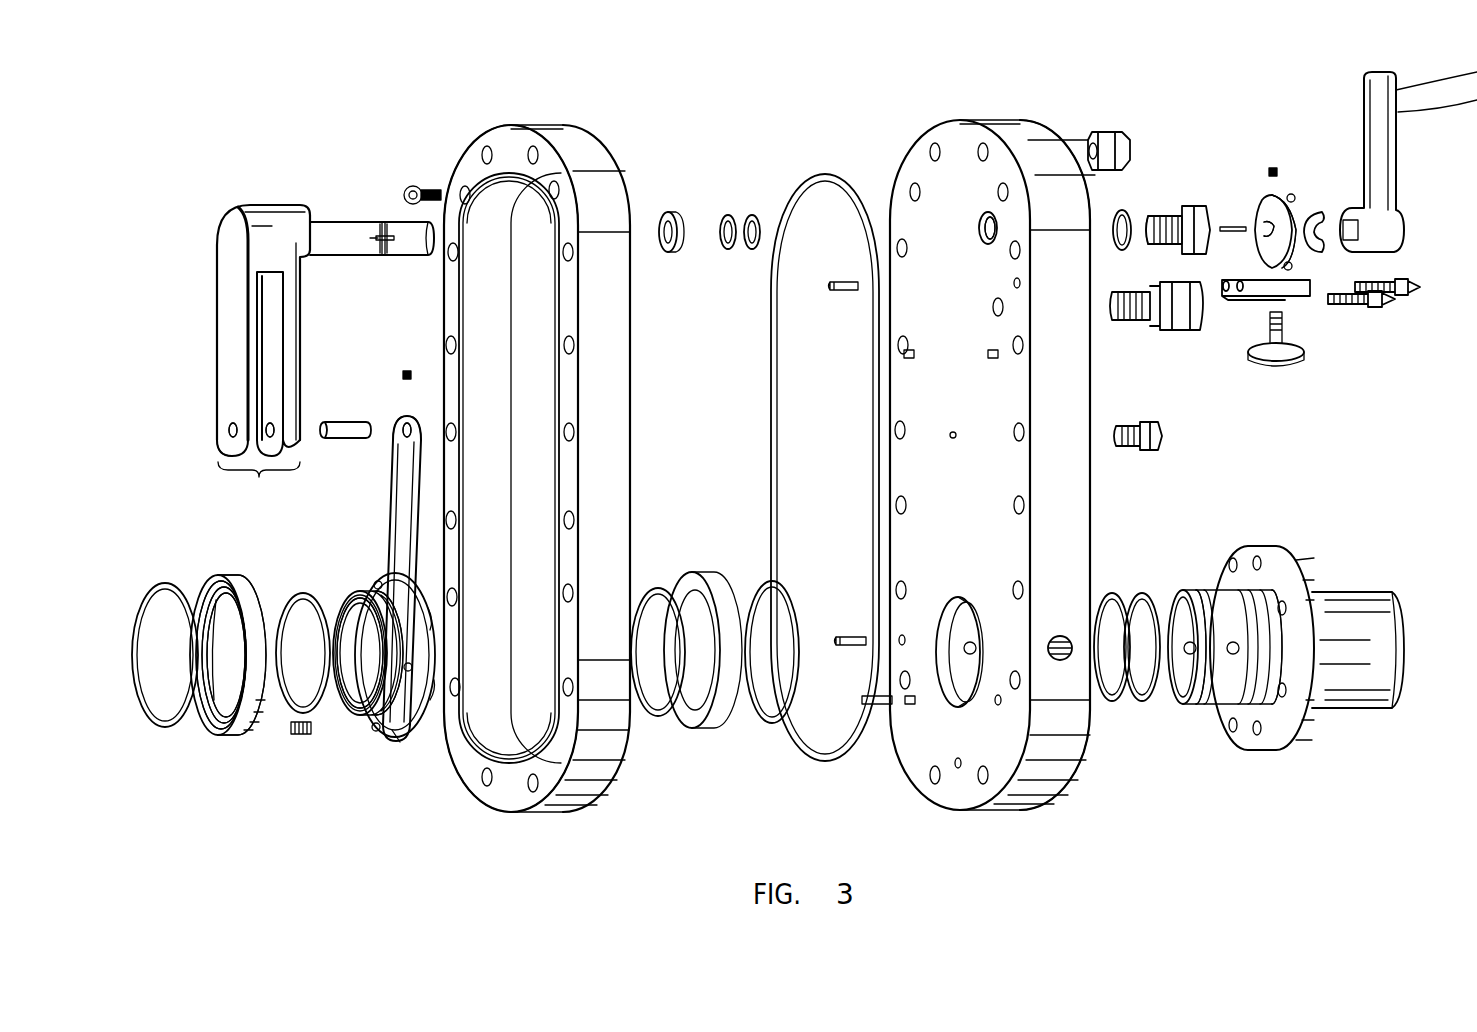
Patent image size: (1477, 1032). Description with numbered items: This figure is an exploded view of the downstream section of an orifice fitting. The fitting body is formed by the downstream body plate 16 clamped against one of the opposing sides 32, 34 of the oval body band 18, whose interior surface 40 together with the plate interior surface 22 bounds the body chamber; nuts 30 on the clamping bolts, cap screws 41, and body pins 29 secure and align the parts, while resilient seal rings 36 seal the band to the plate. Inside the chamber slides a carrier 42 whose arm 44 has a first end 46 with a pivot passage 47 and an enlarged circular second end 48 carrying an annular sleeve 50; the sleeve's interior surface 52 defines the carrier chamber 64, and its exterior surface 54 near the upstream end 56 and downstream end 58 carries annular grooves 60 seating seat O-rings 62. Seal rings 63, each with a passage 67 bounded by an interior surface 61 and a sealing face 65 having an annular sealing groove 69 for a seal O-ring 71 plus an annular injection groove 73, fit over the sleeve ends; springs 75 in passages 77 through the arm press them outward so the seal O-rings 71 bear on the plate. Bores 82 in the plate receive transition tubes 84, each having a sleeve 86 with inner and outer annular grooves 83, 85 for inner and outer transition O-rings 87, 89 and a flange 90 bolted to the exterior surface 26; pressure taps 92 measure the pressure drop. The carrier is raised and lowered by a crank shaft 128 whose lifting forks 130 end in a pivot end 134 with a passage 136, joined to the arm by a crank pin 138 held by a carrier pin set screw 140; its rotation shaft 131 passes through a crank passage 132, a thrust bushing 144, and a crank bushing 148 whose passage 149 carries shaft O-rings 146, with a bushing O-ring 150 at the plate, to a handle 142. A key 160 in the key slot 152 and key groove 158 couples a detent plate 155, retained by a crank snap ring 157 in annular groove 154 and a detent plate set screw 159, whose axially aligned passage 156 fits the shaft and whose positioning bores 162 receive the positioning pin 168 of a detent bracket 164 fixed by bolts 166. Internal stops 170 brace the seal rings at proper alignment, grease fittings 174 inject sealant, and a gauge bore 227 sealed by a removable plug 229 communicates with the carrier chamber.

The downstream body plate 16 is at (1000, 125).
The oval body band 18 is at (540, 128).
The interior surface 22 is at (935, 178).
The exterior surface 26 is at (1045, 130).
The body pins 29 is at (840, 292).
The nuts 30 is at (1122, 148).
The opposing side 32 is at (598, 160).
The opposing side 34 is at (480, 140).
The resilient seal rings 36 is at (808, 185).
The interior surface 40 is at (500, 226).
The cap screws 41 is at (412, 186).
The carrier 42 is at (350, 492).
The arm 44 is at (392, 480).
The first end 46 is at (401, 425).
The pivot passage 47 is at (406, 417).
The enlarged circular second end 48 is at (404, 748).
The annular sleeve 50 is at (350, 712).
The interior surface 52 is at (378, 718).
The exterior surface 54 is at (368, 588).
The upstream end 56 is at (360, 600).
The downstream end 58 is at (430, 702).
The annular grooves 60 is at (428, 608).
The interior surface 61 is at (220, 690).
The seat O-rings 62 is at (288, 702).
The seal rings 63 is at (238, 582).
The carrier chamber 64 is at (355, 635).
The sealing face 65 is at (214, 585).
The passage 67 is at (228, 692).
The annular sealing groove 69 is at (208, 595).
The seal O-ring 71 is at (152, 620).
The annular injection groove 73 is at (246, 724).
The springs 75 is at (301, 738).
The passages 77 is at (378, 580).
The bores 82 is at (985, 655).
The inner annular groove 83 is at (1246, 740).
The transition tubes 84 is at (1342, 690).
The outer annular groove 85 is at (1206, 706).
The sleeve 86 is at (1215, 604).
The inner transition O-ring 87 is at (1150, 596).
The outer transition O-ring 89 is at (1118, 596).
The flange 90 is at (1280, 555).
The pressure taps 92 is at (968, 660).
The crank shaft 128 is at (240, 192).
The lifting forks 130 is at (259, 478).
The rotation shaft 131 is at (365, 222).
The crank passage 132 is at (985, 213).
The pivot end 134 is at (230, 448).
The passage 136 is at (266, 423).
The crank pin 138 is at (348, 428).
The carrier pin set screw 140 is at (407, 370).
The handle 142 is at (1374, 80).
The thrust bushing 144 is at (670, 212).
The shaft O-rings 146 is at (751, 216).
The crank bushing 148 is at (1196, 206).
The passage 149 is at (1146, 230).
The bushing O-ring 150 is at (1124, 210).
The key slot 152 is at (388, 244).
The annular groove 154 is at (383, 222).
The detent plate 155 is at (1264, 220).
The axially aligned passage 156 is at (1262, 232).
The crank snap ring 157 is at (1325, 248).
The key groove 158 is at (1284, 212).
The detent plate set screw 159 is at (1273, 166).
The key 160 is at (1234, 232).
The positioning bores 162 is at (1294, 196).
The detent bracket 164 is at (1290, 302).
The bolts 166 is at (1418, 304).
The positioning pin 168 is at (1277, 362).
The internal stops 170 is at (992, 348).
The grease fittings 174 is at (1186, 312).
The gauge bore 227 is at (950, 432).
The removable plug 229 is at (1160, 436).